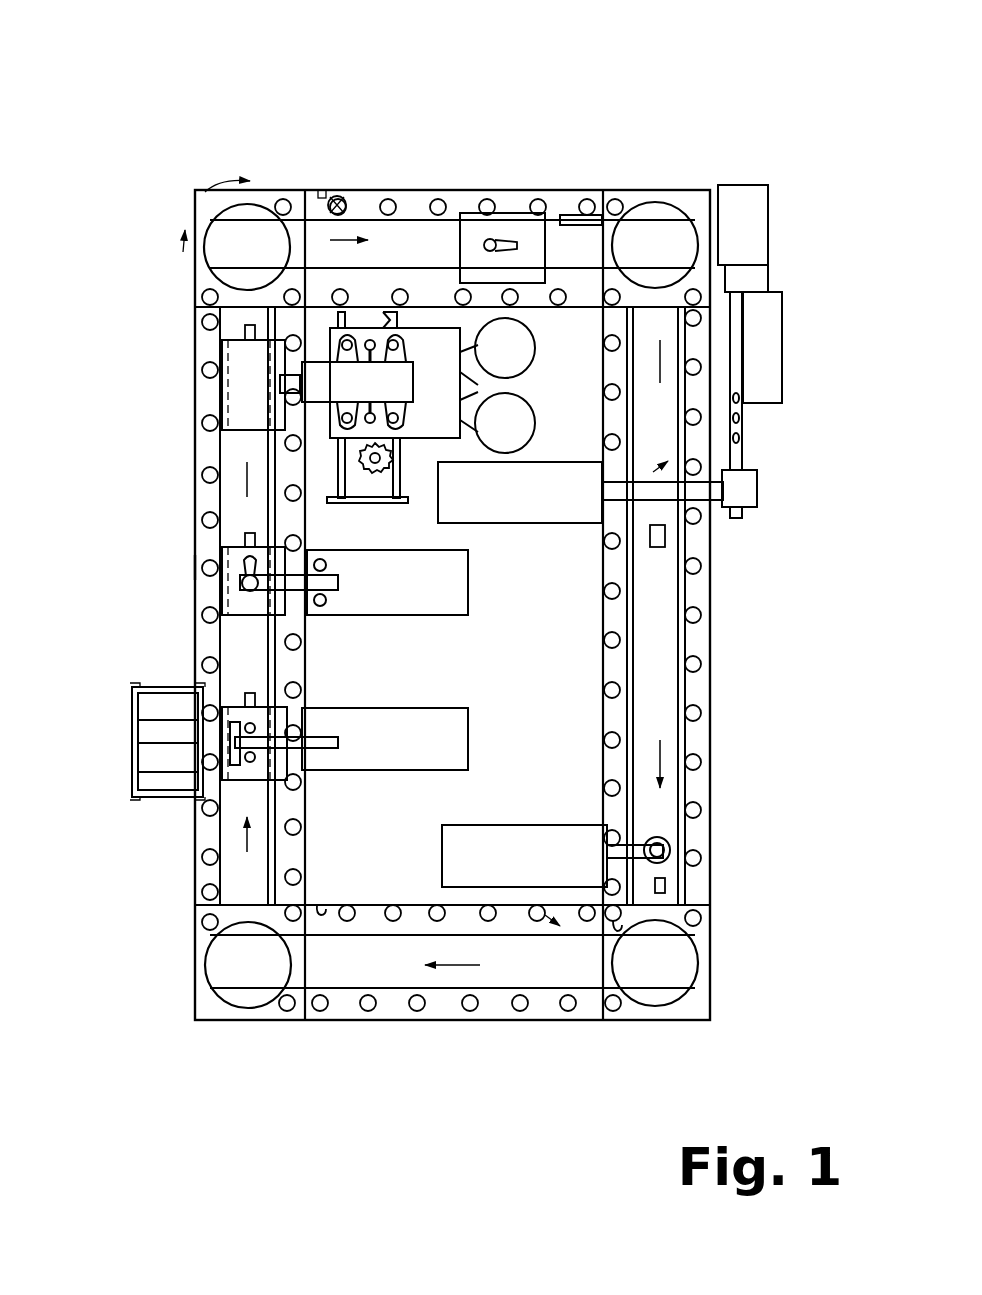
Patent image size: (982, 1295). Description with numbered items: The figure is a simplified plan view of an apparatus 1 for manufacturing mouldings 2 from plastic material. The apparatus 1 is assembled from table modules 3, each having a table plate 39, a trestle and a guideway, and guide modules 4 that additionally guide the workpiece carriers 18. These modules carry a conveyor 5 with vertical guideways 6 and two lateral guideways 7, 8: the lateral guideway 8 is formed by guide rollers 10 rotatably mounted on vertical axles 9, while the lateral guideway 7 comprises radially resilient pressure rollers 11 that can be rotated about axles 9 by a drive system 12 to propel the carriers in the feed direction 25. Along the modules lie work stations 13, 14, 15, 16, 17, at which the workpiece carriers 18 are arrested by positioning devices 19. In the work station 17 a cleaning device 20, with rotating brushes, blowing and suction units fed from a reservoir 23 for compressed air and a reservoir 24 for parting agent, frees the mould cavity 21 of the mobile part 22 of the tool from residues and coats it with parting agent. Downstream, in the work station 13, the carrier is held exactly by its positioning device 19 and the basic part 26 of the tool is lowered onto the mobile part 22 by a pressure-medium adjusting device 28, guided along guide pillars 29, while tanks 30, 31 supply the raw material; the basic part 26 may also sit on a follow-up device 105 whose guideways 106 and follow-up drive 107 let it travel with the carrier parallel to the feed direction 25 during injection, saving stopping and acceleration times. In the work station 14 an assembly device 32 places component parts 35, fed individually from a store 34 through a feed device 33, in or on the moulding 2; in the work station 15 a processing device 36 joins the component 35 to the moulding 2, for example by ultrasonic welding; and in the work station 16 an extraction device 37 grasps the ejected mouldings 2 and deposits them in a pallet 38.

The apparatus 1 is at (205, 110).
The moulding 2 is at (540, 236).
The table module 3 is at (716, 665).
The guide module 4 is at (272, 192).
The conveyor 5 is at (368, 192).
The vertical guideway 6 is at (350, 1021).
The lateral guideway 7 is at (405, 1021).
The lateral guideway 8 is at (600, 1020).
The vertical axle 9 is at (356, 192).
The guide roller 10 is at (553, 1021).
The pressure roller 11 is at (338, 192).
The drive system 12 is at (323, 192).
The work station 13 is at (176, 368).
The work station 14 is at (703, 485).
The work station 15 is at (697, 828).
The work station 16 is at (180, 822).
The work station 17 is at (178, 565).
The workpiece carrier 18 is at (578, 202).
The positioning device 19 is at (245, 335).
The cleaning device 20 is at (467, 585).
The mould cavity 21 is at (262, 578).
The mobile part of the tool 22 is at (243, 598).
The reservoir for compressed air 23 is at (240, 567).
The reservoir for parting agent 24 is at (320, 603).
The feed direction 25 is at (268, 478).
The basic part of the tool 26 is at (222, 340).
The adjusting device 28 is at (372, 343).
The guide pillar 29 is at (496, 235).
The tank 30 is at (535, 412).
The tank 31 is at (520, 345).
The assembly device 32 is at (545, 478).
The feed device 33 is at (770, 305).
The store 34 is at (745, 240).
The component part 35 is at (745, 433).
The processing device 36 is at (570, 840).
The extraction device 37 is at (467, 735).
The pallet 38 is at (165, 800).
The table plate 39 is at (336, 1021).
The follow-up device 105 is at (410, 514).
The guideways 106 is at (394, 343).
The follow-up drive 107 is at (338, 460).